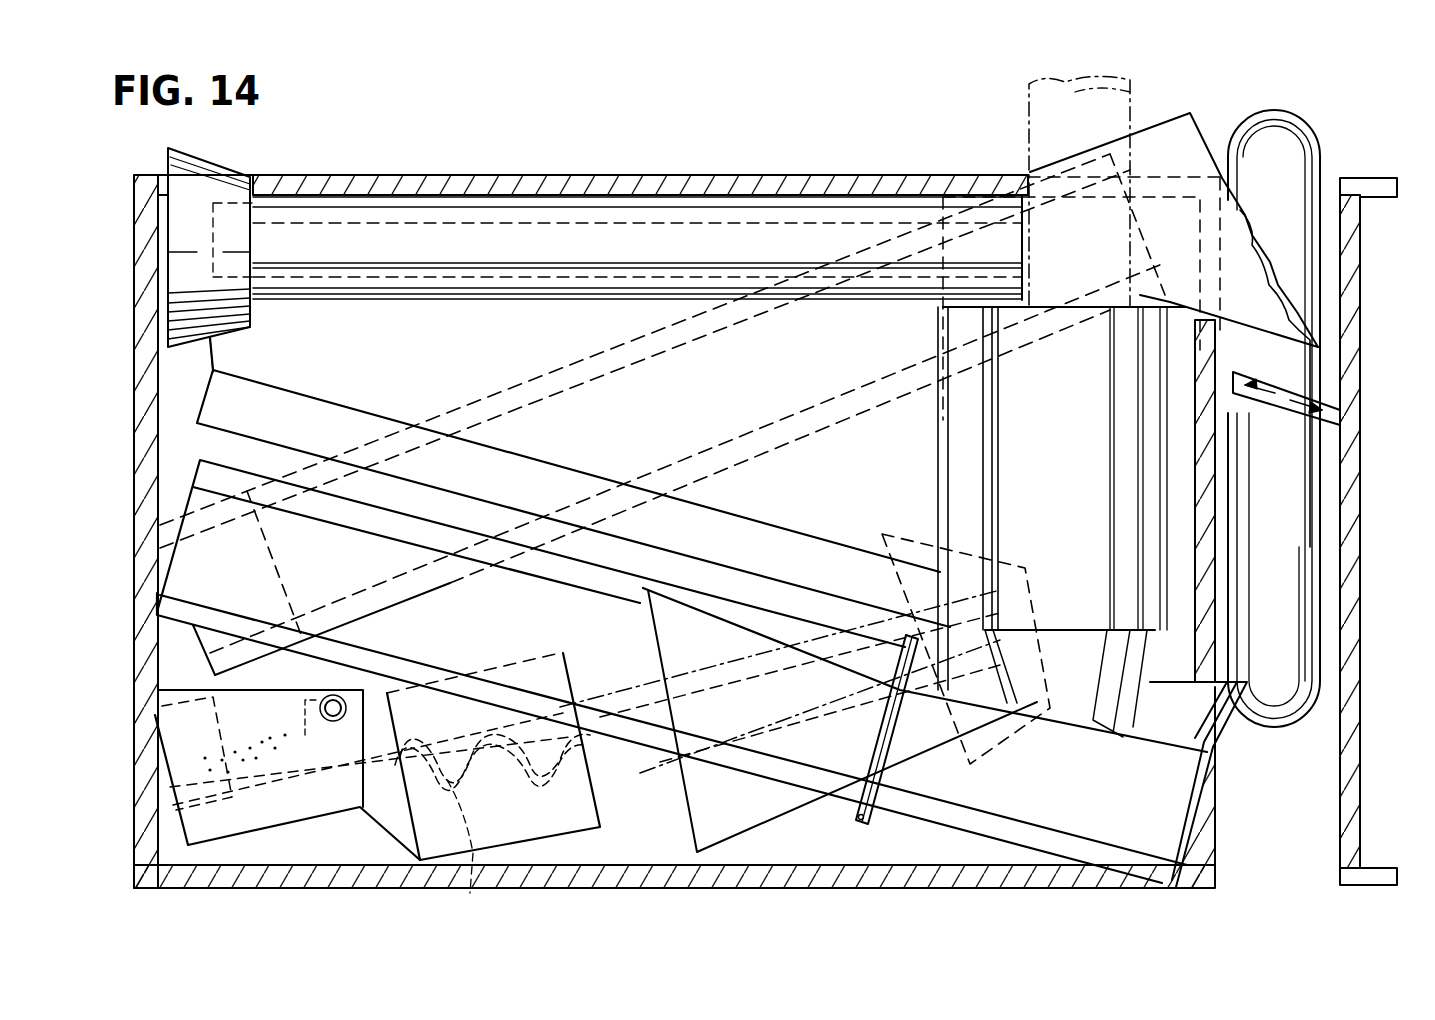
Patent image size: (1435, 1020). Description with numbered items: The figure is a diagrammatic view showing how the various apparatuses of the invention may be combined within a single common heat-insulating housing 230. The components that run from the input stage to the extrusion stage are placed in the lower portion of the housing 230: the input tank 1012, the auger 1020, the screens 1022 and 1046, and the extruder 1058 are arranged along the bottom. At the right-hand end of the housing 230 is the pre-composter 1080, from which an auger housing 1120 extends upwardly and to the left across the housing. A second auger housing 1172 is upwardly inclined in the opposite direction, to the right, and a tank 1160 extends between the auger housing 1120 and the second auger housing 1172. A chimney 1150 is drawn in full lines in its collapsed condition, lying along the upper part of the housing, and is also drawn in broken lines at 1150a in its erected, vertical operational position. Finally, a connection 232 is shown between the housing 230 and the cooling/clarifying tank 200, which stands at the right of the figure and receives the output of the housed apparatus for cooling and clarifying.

The cooling/clarifying tank 200 is at (1340, 822).
The heat-insulating housing 230 is at (120, 437).
The connection 232 is at (1353, 462).
The input tank 1012 is at (190, 743).
The auger 1020 is at (465, 858).
The screen 1022 is at (607, 826).
The screen 1046 is at (817, 826).
The extruder 1058 is at (1008, 576).
The pre-composter 1080 is at (978, 464).
The auger housing 1120 is at (765, 765).
The chimney 1150 is at (438, 296).
The chimney in erected position 1150a is at (1027, 128).
The tank 1160 is at (200, 352).
The second auger housing 1172 is at (590, 352).